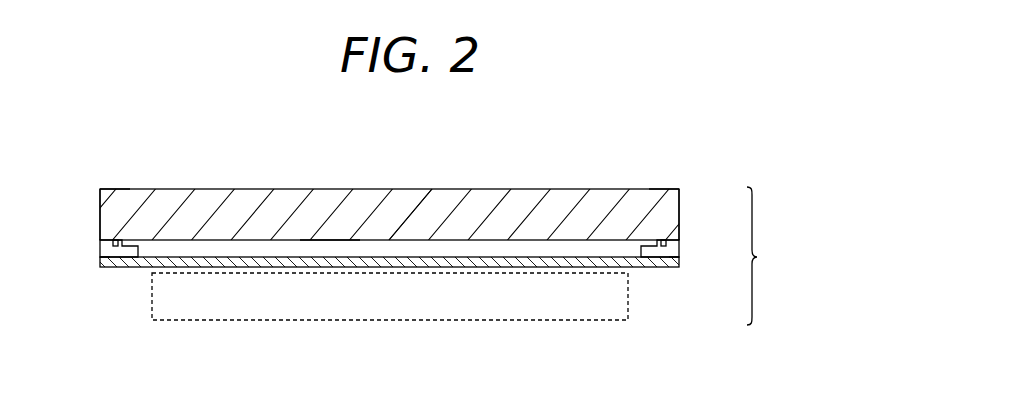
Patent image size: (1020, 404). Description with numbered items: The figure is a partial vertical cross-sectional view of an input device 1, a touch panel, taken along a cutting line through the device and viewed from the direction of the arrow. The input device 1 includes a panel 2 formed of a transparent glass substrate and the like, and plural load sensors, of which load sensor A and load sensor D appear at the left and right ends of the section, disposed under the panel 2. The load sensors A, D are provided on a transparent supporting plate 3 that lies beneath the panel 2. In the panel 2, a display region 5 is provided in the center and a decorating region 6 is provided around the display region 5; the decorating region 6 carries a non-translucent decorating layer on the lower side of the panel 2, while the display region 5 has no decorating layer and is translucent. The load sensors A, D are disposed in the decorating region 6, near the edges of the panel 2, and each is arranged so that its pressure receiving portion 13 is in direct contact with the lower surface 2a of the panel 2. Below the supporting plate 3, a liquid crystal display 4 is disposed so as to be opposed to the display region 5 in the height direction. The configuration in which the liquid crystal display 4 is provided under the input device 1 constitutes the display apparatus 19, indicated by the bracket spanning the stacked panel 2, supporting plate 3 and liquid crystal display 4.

The input device 1 is at (697, 105).
The panel 2 is at (524, 205).
The lower surface of the panel 2a is at (330, 240).
The supporting plate 3 is at (658, 268).
The liquid crystal display 4 is at (628, 297).
The display region 5 is at (396, 205).
The decorating region 6 is at (110, 205).
The pressure receiving portion 13 is at (108, 245).
The display apparatus 19 is at (767, 256).
The load sensor A is at (108, 253).
The load sensor D is at (678, 253).